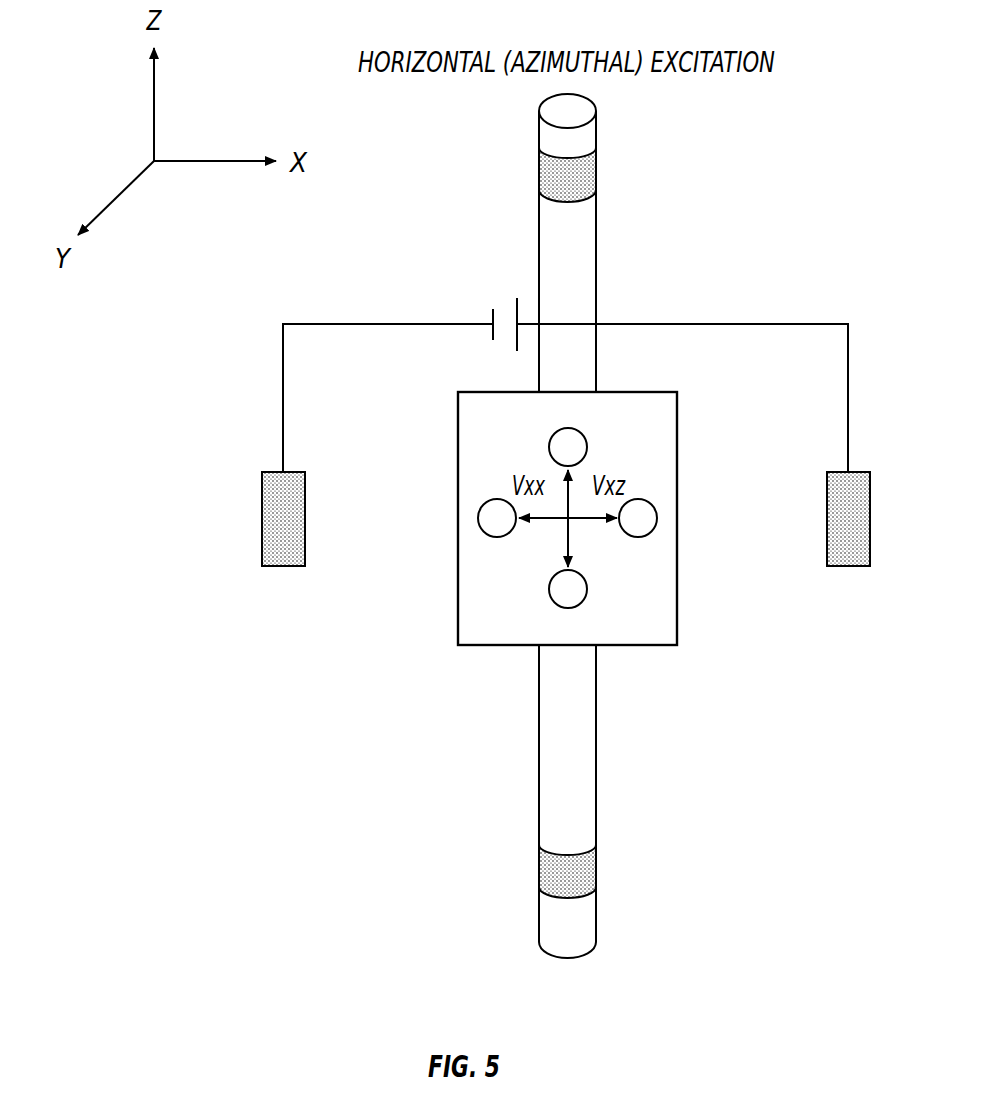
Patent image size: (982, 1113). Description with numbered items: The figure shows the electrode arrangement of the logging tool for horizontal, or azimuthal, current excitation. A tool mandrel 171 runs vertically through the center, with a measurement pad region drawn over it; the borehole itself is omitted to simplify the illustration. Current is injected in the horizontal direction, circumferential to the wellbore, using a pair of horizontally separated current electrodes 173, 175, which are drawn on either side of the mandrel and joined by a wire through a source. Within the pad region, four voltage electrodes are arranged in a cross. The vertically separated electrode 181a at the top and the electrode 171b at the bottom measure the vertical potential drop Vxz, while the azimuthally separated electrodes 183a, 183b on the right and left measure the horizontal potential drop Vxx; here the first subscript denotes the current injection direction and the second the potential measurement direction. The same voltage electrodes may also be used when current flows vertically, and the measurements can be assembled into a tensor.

The tool mandrel 171 is at (596, 111).
The bottom sensor electrode 171b is at (587, 589).
The vertically separated voltage electrode 181a is at (587, 447).
The azimuthally separated voltage electrode 183a is at (657, 518).
The azimuthally separated voltage electrode 183b is at (478, 518).
The current electrode 173 is at (827, 532).
The current electrode 175 is at (262, 532).